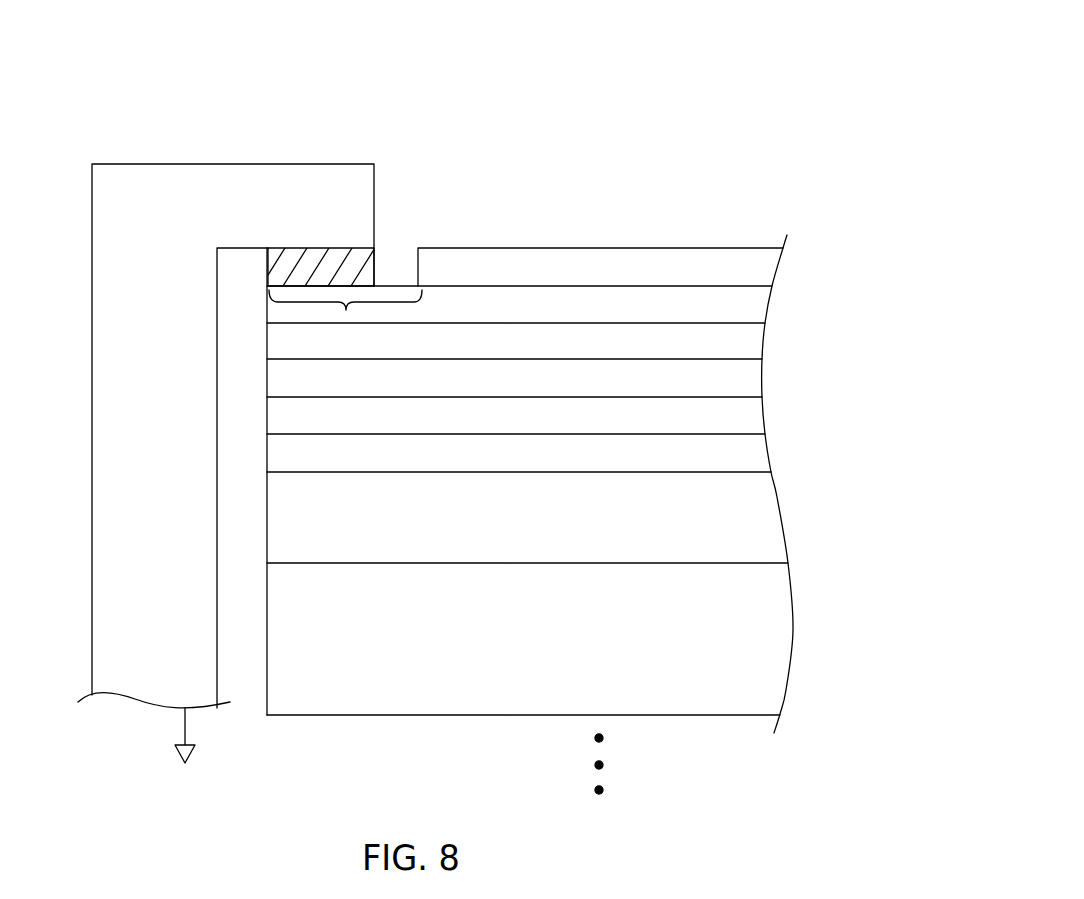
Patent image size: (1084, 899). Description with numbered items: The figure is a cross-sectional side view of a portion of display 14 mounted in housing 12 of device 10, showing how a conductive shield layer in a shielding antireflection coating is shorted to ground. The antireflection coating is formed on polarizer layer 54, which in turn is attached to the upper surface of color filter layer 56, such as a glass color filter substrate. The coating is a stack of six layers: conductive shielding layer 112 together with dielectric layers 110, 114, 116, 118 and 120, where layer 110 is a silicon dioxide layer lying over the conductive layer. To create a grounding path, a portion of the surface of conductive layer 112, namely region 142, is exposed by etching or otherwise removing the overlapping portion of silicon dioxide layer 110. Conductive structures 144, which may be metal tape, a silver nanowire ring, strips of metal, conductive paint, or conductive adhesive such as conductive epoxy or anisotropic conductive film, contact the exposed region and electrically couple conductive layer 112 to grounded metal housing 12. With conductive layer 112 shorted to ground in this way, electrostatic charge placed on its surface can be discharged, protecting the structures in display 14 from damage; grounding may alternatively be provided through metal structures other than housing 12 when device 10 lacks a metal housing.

The device 10 is at (713, 64).
The housing 12 is at (222, 180).
The display 14 is at (729, 200).
The polarizer layer 54 is at (768, 515).
The color filter layer 56 is at (778, 633).
The silicon dioxide layer 110 is at (763, 267).
The conductive shielding layer 112 is at (755, 303).
The dielectric layer 114 is at (750, 341).
The dielectric layer 116 is at (750, 378).
The dielectric layer 118 is at (755, 415).
The dielectric layer 120 is at (758, 452).
The region 142 is at (346, 310).
The conductive structures 144 is at (368, 265).